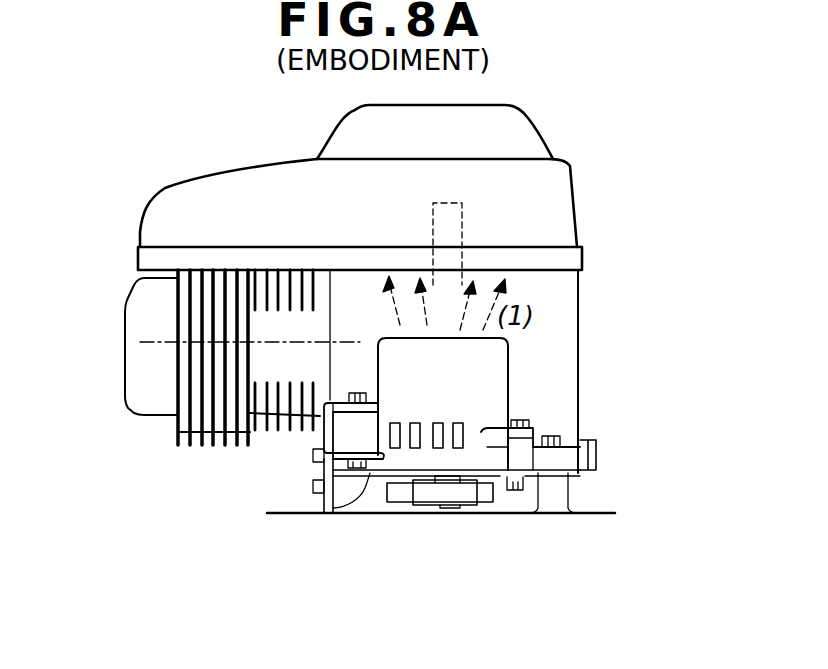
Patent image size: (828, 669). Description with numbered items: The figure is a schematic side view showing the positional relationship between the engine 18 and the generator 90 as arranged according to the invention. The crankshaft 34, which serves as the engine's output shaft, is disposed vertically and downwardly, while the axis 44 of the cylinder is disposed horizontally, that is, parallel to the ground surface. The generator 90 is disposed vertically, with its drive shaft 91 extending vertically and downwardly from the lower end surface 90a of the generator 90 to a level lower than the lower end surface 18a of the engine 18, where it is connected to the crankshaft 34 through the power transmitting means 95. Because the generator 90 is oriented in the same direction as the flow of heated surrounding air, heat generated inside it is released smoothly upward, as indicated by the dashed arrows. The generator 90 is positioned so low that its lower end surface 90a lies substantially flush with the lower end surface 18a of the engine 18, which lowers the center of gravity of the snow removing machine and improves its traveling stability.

The engine 18 is at (580, 298).
The lower end surface of the engine 18a is at (330, 508).
The crankshaft 34 is at (455, 236).
The axis of the cylinder 44 is at (157, 342).
The generator 90 is at (508, 378).
The lower end surface of the generator 90a is at (503, 478).
The drive shaft 91 is at (480, 492).
The power transmitting means 95 is at (463, 503).